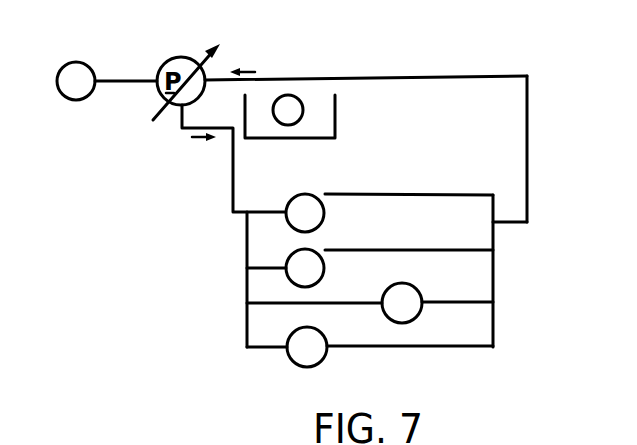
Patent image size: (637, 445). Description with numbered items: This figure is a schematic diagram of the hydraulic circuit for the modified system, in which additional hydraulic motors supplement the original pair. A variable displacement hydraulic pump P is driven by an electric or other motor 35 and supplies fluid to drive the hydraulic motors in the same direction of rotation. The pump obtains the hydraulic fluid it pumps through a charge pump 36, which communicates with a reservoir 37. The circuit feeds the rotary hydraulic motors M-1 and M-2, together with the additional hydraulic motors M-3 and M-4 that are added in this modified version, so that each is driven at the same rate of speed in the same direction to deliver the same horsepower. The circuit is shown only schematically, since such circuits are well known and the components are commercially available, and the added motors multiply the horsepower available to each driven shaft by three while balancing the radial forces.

The motor 35 is at (79, 99).
The charge pump 36 is at (297, 118).
The reservoir 37 is at (335, 113).
The rotary hydraulic motor M-1 is at (321, 212).
The rotary hydraulic motor M-2 is at (321, 266).
The hydraulic motor M-3 is at (410, 317).
The hydraulic motor M-4 is at (316, 356).